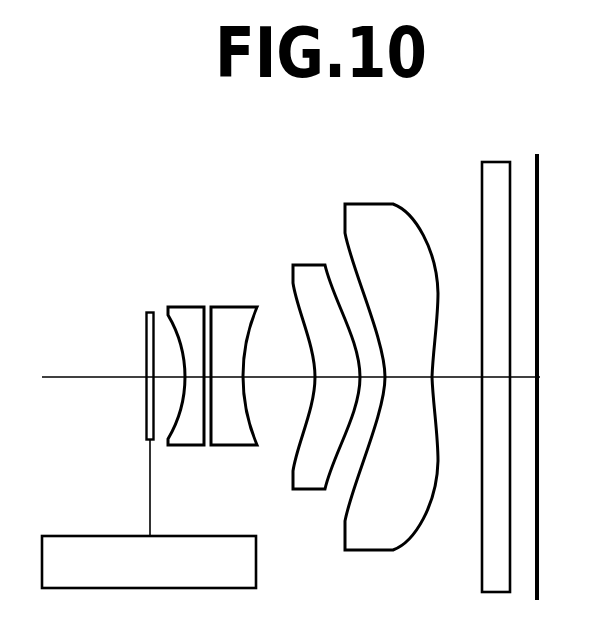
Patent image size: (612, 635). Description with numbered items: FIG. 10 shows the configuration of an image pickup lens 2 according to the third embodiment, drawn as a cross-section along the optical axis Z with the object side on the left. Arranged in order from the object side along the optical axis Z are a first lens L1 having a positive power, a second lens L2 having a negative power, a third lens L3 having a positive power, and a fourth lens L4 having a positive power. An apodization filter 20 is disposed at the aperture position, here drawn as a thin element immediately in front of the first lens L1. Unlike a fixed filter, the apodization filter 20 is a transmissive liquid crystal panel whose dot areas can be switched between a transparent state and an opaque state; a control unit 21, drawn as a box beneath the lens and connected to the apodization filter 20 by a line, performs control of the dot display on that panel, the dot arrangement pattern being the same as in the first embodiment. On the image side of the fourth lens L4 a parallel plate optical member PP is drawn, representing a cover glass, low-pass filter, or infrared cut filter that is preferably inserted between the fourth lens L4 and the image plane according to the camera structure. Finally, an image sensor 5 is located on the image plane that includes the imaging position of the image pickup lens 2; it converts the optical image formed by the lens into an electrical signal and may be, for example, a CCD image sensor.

The image pickup lens 2 is at (67, 150).
The apodization filter 20 is at (146, 353).
The control unit 21 is at (256, 562).
The first lens L1 is at (185, 307).
The second lens L2 is at (228, 307).
The third lens L3 is at (309, 265).
The fourth lens L4 is at (368, 204).
The parallel plate optical member PP is at (495, 162).
The image sensor 5 is at (537, 154).
The optical axis Z is at (281, 375).